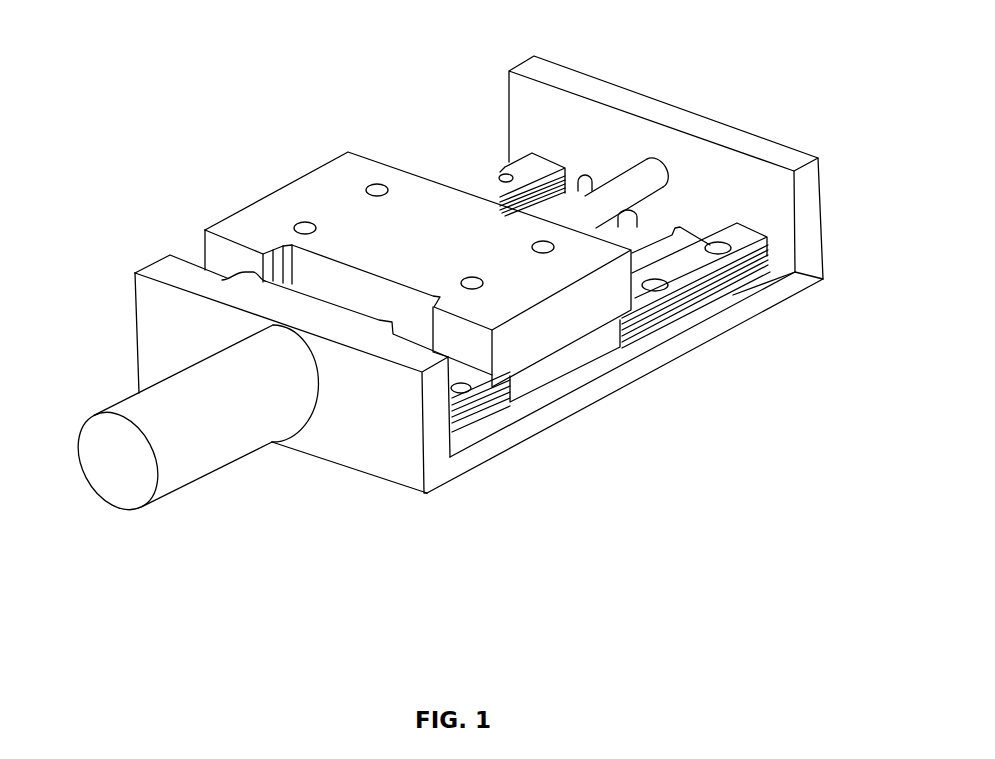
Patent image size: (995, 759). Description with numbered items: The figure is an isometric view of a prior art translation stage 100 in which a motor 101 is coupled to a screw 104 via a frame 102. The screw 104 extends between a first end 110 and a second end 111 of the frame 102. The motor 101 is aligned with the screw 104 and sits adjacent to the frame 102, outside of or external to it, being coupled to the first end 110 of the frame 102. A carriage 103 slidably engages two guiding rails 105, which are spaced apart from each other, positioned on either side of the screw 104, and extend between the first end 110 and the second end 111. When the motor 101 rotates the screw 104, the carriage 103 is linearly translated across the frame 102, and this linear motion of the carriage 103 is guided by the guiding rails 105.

The translation stage 100 is at (482, 264).
The motor 101 is at (210, 423).
The frame 102 is at (182, 278).
The carriage 103 is at (423, 238).
The screw 104 is at (582, 208).
The guiding rails 105 is at (703, 283).
The first end 110 is at (882, 73).
The second end 111 is at (497, 64).